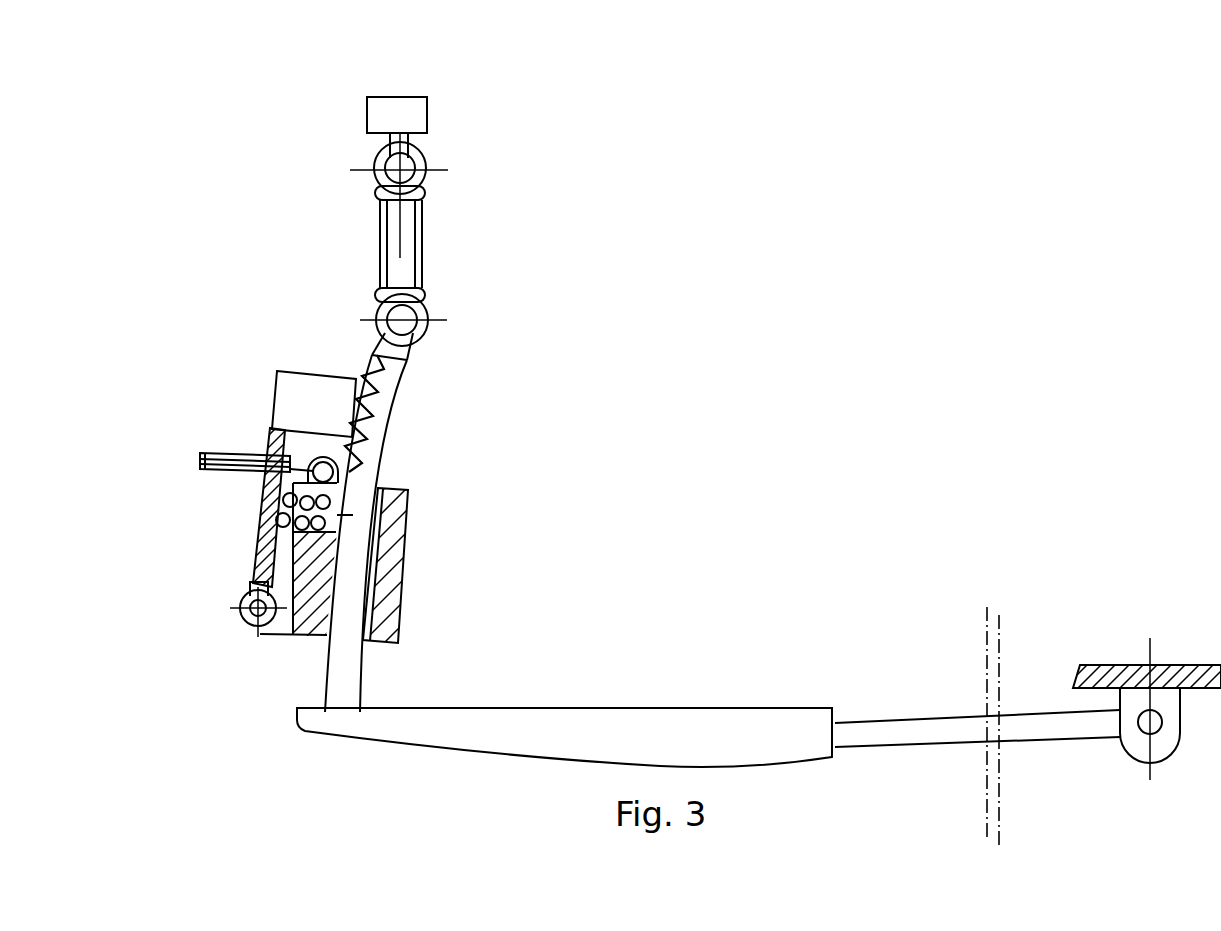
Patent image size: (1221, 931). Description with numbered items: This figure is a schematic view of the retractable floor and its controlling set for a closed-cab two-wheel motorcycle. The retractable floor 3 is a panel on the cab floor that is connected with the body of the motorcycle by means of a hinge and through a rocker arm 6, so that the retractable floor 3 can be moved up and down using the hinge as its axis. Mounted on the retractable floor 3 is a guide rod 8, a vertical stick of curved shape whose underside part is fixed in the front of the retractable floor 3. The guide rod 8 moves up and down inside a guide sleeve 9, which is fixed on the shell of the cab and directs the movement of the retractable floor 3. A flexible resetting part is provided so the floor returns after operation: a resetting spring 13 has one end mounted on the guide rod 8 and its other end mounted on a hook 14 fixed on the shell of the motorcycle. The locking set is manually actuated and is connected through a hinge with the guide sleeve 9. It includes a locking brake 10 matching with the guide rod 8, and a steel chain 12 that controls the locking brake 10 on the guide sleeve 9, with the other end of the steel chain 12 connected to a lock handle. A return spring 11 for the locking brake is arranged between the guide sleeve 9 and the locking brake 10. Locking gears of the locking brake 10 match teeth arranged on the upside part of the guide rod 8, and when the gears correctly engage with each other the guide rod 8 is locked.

The retractable floor 3 is at (668, 730).
The rocker arm 6 is at (915, 737).
The guide rod 8 is at (343, 665).
The guide sleeve 9 is at (257, 580).
The locking brake 10 is at (262, 545).
The return spring 11 is at (275, 455).
The steel chain 12 is at (242, 452).
The resetting spring 13 is at (377, 297).
The hook 14 is at (397, 112).